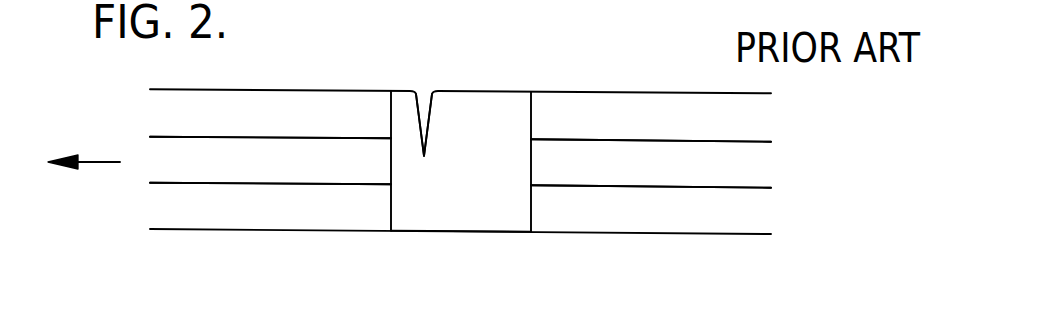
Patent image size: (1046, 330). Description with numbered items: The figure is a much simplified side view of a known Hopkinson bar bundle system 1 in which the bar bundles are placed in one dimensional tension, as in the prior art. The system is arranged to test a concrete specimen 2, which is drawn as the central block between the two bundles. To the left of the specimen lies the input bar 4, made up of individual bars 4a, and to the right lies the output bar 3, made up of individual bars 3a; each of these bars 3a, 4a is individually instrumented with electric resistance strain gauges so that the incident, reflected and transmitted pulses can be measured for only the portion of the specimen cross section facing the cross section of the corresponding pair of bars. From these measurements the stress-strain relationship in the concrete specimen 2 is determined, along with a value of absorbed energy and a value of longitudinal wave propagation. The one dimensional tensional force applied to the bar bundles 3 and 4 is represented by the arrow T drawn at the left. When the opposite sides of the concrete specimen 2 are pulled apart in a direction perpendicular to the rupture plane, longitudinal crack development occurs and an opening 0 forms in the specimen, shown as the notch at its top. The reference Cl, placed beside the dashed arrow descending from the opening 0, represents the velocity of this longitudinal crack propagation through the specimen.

The Hopkinson bar bundle system 1 is at (508, 78).
The concrete specimen 2 is at (468, 242).
The output bar 3 is at (639, 242).
The bar of the output bar 3a is at (649, 158).
The input bar 4 is at (331, 240).
The bar of the input bar 4a is at (297, 158).
The opening 0 is at (426, 194).
The velocity of longitudinal crack propagation Cl is at (461, 206).
The one dimensional tensional force T is at (84, 182).